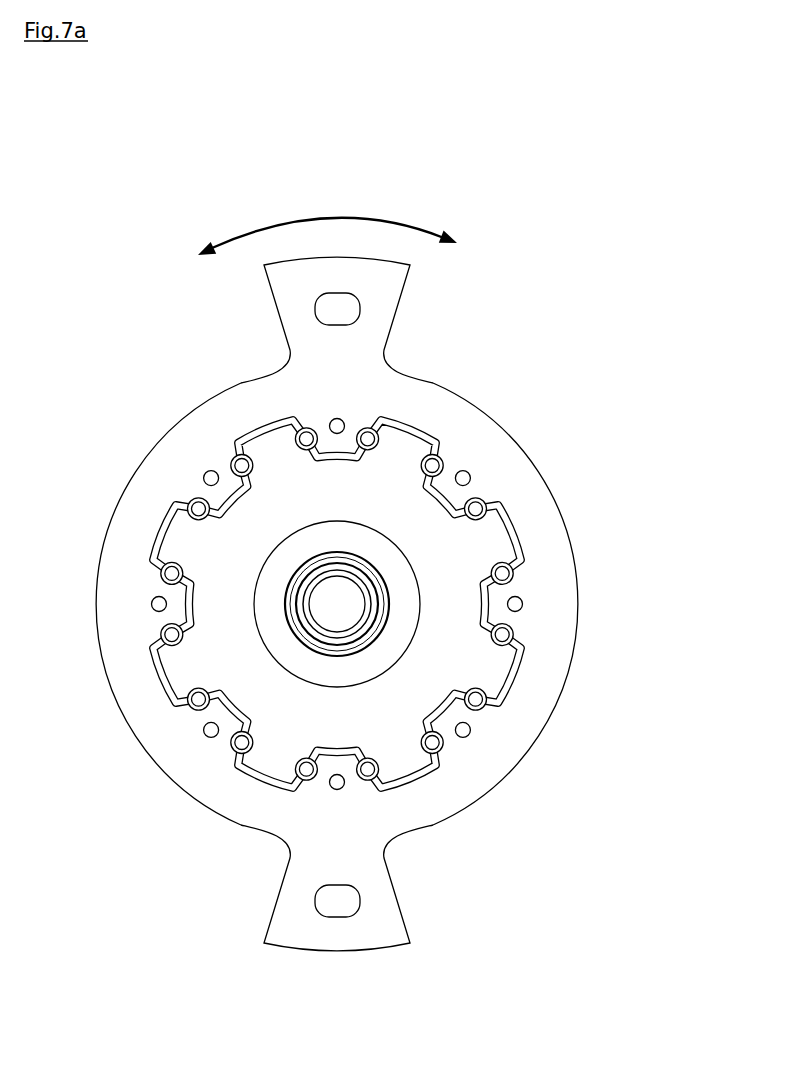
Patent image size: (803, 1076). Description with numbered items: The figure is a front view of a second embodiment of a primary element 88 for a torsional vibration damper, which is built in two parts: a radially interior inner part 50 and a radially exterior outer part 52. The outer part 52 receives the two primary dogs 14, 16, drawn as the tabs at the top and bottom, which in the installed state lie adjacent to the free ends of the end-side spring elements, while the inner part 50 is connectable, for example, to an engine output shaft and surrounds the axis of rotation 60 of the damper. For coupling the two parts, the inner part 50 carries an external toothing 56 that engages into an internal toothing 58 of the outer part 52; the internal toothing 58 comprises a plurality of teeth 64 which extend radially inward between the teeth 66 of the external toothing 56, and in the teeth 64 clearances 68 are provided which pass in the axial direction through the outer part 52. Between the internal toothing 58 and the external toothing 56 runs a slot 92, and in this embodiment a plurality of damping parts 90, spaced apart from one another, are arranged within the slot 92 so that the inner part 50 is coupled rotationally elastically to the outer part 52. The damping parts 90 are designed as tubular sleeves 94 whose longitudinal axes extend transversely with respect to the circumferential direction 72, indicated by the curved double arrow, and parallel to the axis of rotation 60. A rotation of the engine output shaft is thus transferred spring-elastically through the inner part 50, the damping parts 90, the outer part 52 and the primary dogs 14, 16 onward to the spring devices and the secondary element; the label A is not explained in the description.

The primary dog 14 is at (372, 304).
The primary dog 16 is at (372, 907).
The inner part 50 is at (252, 703).
The outer part 52 is at (225, 793).
The external toothing 56 is at (406, 771).
The internal toothing 58 is at (455, 745).
The axis of rotation 60 is at (337, 604).
The tooth 64 is at (228, 467).
The tooth 66 is at (190, 660).
The clearance 68 is at (207, 474).
The circumferential direction 72 is at (328, 221).
The primary element 88 is at (513, 351).
The damping part 90 is at (488, 515).
The slot 92 is at (284, 787).
The tubular sleeve 94 is at (478, 698).
The axis A is at (163, 629).